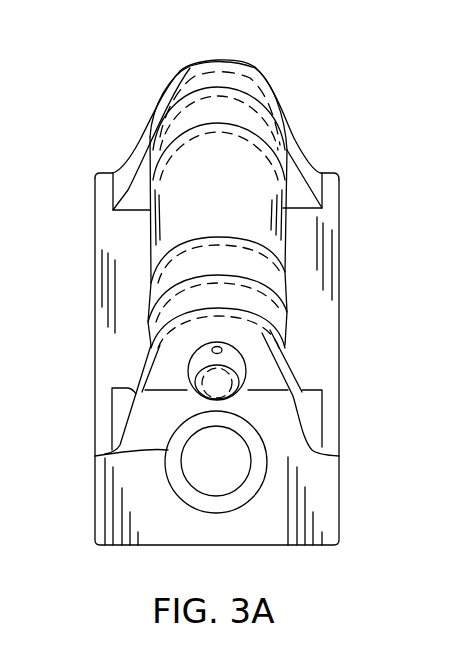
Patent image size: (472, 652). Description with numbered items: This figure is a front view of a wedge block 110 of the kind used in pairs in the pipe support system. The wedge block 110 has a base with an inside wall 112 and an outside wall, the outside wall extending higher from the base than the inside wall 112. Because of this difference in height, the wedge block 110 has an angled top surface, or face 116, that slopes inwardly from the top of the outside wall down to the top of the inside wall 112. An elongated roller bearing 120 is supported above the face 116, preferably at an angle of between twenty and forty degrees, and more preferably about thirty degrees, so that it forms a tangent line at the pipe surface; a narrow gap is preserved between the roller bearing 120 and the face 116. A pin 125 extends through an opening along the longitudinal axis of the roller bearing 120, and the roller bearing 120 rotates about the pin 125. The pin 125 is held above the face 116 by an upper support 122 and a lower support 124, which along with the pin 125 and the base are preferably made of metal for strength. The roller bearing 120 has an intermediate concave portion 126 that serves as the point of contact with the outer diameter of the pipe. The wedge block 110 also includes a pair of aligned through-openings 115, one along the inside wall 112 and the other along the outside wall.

The wedge block 110 is at (90, 110).
The inside wall 112 is at (310, 502).
The through-opening 115 is at (216, 462).
The angled top surface (face) 116 is at (308, 327).
The roller bearing 120 is at (147, 227).
The upper support 122 is at (258, 70).
The lower support 124 is at (292, 373).
The pin 125 is at (190, 352).
The intermediate concave portion 126 is at (175, 183).